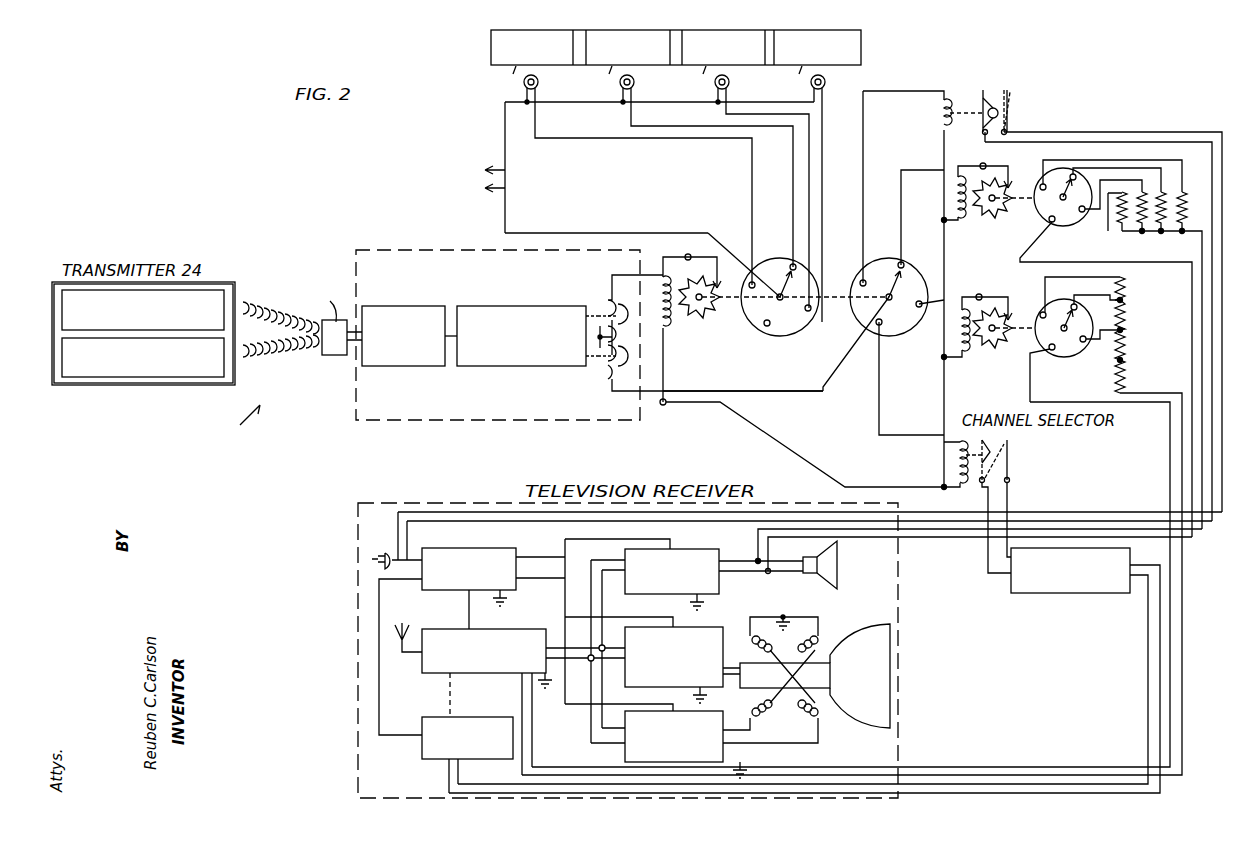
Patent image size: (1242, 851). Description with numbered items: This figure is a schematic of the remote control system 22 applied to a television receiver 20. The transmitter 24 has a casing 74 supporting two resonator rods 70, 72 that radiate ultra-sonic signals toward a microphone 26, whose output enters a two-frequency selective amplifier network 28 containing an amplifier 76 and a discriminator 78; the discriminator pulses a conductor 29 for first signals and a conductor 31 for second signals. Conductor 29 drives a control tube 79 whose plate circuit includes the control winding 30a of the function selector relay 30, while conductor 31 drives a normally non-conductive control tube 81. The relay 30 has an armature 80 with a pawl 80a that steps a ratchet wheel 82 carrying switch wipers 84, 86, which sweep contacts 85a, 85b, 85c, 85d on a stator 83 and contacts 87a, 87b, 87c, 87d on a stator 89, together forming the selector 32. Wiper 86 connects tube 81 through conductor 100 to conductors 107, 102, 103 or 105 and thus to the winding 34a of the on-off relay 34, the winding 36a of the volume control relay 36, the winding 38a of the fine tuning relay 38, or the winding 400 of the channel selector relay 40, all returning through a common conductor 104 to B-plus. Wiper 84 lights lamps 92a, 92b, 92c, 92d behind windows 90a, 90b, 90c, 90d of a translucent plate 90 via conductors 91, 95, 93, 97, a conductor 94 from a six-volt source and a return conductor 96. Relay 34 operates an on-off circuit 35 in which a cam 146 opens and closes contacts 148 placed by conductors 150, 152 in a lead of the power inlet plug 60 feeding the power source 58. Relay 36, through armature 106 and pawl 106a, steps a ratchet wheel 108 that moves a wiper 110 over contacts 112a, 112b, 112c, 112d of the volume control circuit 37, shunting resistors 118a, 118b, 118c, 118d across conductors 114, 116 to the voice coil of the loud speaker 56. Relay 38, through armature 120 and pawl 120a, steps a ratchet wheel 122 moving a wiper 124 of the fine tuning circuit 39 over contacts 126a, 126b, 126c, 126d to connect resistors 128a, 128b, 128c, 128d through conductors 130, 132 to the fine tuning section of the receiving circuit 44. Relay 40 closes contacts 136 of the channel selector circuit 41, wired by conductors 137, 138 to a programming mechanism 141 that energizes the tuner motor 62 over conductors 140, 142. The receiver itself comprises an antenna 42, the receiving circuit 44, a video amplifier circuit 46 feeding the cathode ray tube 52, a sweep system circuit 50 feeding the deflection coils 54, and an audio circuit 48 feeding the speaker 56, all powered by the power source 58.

The television receiver 20 is at (893, 578).
The remote control system 22 is at (246, 420).
The transmitter 24 is at (152, 389).
The microphone 26 is at (330, 356).
The two-frequency selective amplifier network 28 is at (358, 404).
The conductor 29 is at (592, 300).
The function selector relay 30 is at (768, 299).
The control winding 30a is at (665, 328).
The conductor 31 is at (592, 370).
The selector 32 is at (836, 303).
The on-off relay 34 is at (969, 116).
The relay winding 34a is at (940, 113).
The on-off circuit 35 is at (1005, 97).
The volume control relay 36 is at (977, 193).
The relay winding 36a is at (952, 191).
The volume control circuit 37 is at (1003, 209).
The fine tuning control relay 38 is at (982, 326).
The relay winding 38a is at (966, 350).
The fine tuning circuit 39 is at (1004, 338).
The channel selector relay 40 is at (977, 472).
The channel selector relay coil 400 is at (950, 462).
The channel selector circuit 41 is at (1018, 469).
The antenna 42 is at (392, 640).
The receiving circuit 44 is at (456, 619).
The video amplifier circuit 46 is at (720, 620).
The audio circuit 48 is at (700, 556).
The sweep system circuit 50 is at (625, 741).
The cathode ray tube 52 is at (872, 632).
The deflection coils 54 is at (806, 642).
The loud speaker 56 is at (830, 570).
The receiver power source 58 is at (499, 556).
The power inlet plug 60 is at (366, 562).
The tuner motor 62 is at (497, 722).
The selector resonator rod 70 is at (218, 298).
The selected condition resonator rod 72 is at (215, 365).
The casing 74 is at (85, 385).
The amplifier 76 is at (409, 336).
The discriminator 78 is at (521, 336).
The control tube 79 is at (620, 303).
The armature 80 is at (674, 257).
The pawl pivot 80a is at (735, 252).
The control tube 81 is at (712, 394).
The ratchet wheel 82 is at (700, 316).
The stator 83 is at (782, 332).
The switch wiper 84 is at (744, 257).
The contact 85a is at (759, 299).
The contact 85b is at (768, 283).
The contact 85c is at (805, 315).
The contact 85d is at (762, 331).
The switch wiper 86 is at (868, 280).
The contact 87a is at (858, 280).
The contact 87b is at (904, 263).
The contact 87c is at (905, 312).
The contact 87d is at (882, 326).
The stator 89 is at (856, 312).
The translucent plate 90 is at (480, 54).
The on-off window 90a is at (513, 70).
The volume window 90b is at (610, 70).
The fine tuning window 90c is at (706, 70).
The channel selection window 90d is at (803, 70).
The conductor 91 is at (537, 118).
The lamp 92a is at (538, 82).
The lamp 92b is at (634, 82).
The lamp 92c is at (729, 82).
The lamp 92d is at (825, 82).
The conductor 93 is at (726, 116).
The conductor 94 is at (505, 124).
The conductor 95 is at (631, 120).
The conductor 96 is at (626, 233).
The conductor 97 is at (823, 129).
The conductor 100 is at (730, 391).
The conductor 102 is at (901, 187).
The conductor 103 is at (936, 320).
The common conductor 104 is at (795, 444).
The conductor 105 is at (879, 400).
The armature 106 is at (958, 170).
The pawl 106a is at (1005, 164).
The conductor 107 is at (863, 175).
The ratchet wheel 108 is at (1022, 177).
The wiper 110 is at (1058, 180).
The contact 112a is at (1040, 192).
The contact 112b is at (1080, 172).
The contact 112c is at (1080, 215).
The contact 112d is at (1050, 224).
The conductor 114 is at (1192, 268).
The conductor 116 is at (1106, 379).
The resistor 118a is at (1187, 190).
The resistor 118b is at (1162, 232).
The resistor 118c is at (1141, 232).
The resistor 118d is at (1120, 232).
The armature 120 is at (1002, 297).
The pawl 120a is at (976, 297).
The ratchet wheel 122 is at (1012, 328).
The wiper 124 is at (1064, 319).
The contact 126a is at (1040, 314).
The contact 126b is at (1095, 297).
The contact 126c is at (1085, 342).
The contact 126d is at (1040, 357).
The resistor 128a is at (1140, 287).
The resistor 128b is at (1140, 316).
The resistor 128c is at (1140, 346).
The resistor 128d is at (1140, 376).
The lead 130 is at (1030, 397).
The conductor 132 is at (1110, 389).
The contacts 136 is at (998, 440).
The conductor 137 is at (988, 557).
The conductor 138 is at (988, 570).
The conductor 140 is at (1148, 612).
The programming mechanism 141 is at (1050, 593).
The conductor 142 is at (1160, 636).
The cam 146 is at (982, 108).
The contacts 148 is at (1008, 85).
The conductor 150 is at (1096, 133).
The conductor 152 is at (1136, 142).